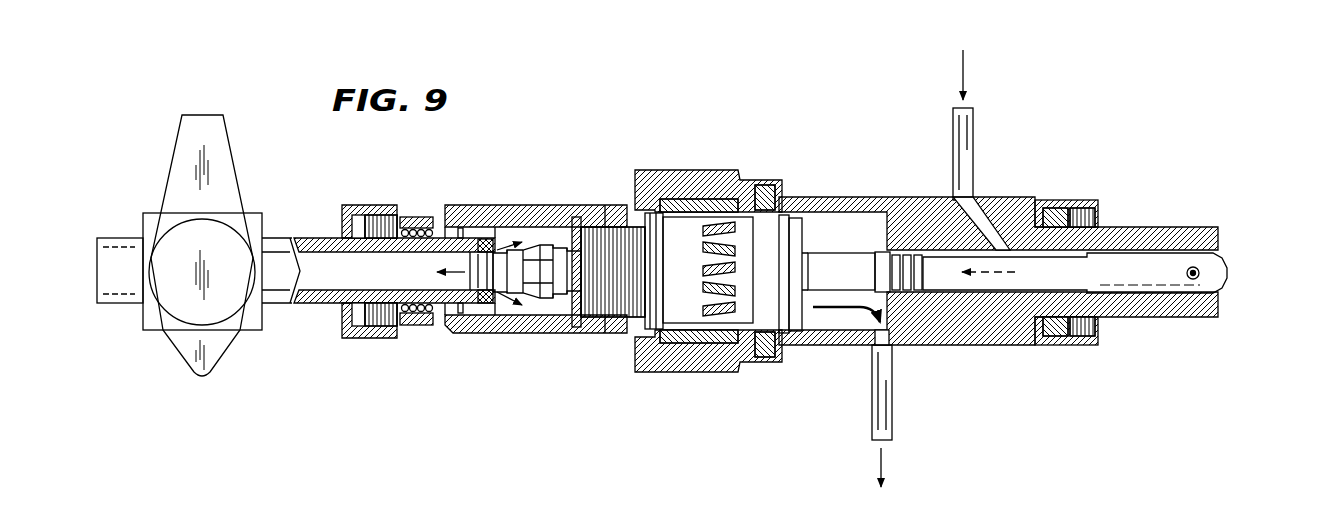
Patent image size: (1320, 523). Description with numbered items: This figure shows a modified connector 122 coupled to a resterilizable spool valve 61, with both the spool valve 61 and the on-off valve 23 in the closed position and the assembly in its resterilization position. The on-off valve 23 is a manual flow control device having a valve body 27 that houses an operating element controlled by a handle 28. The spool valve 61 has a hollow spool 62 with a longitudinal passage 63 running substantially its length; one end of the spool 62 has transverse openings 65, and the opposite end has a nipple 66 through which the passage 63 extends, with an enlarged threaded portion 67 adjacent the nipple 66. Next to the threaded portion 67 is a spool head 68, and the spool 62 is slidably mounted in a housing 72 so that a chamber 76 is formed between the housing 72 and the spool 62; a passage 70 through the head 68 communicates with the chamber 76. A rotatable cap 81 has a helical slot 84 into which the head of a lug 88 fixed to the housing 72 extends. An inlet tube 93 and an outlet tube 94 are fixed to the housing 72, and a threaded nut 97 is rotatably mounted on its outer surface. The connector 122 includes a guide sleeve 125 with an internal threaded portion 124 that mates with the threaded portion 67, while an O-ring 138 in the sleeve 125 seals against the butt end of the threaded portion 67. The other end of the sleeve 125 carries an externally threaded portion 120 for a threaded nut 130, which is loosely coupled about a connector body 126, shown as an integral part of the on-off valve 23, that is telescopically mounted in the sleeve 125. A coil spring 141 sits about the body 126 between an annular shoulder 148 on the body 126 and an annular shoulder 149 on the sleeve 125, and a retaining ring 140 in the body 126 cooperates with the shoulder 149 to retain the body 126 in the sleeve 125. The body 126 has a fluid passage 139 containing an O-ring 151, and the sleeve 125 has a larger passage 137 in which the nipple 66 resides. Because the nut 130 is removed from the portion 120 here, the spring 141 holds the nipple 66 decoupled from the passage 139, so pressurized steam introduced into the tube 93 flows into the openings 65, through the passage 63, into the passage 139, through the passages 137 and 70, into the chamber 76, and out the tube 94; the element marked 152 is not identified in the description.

The on-off valve 23 is at (175, 243).
The valve body 27 is at (253, 330).
The handle 28 is at (201, 127).
The resterilizable spool valve 61 is at (867, 163).
The hollow spool 62 is at (1017, 266).
The longitudinal passage 63 is at (727, 272).
The transverse openings 65 is at (1189, 283).
The nipple 66 is at (548, 236).
The threaded portion 67 is at (617, 234).
The spool head 68 is at (685, 230).
The passage 70 is at (722, 308).
The housing 72 is at (996, 330).
The chamber 76 is at (820, 222).
The rotatable cap 81 is at (653, 168).
The helical slot 84 is at (700, 338).
The lug 88 is at (763, 185).
The inlet tube 93 is at (966, 118).
The outlet tube 94 is at (885, 413).
The threaded nut 97 is at (1084, 200).
The externally threaded portion 120 is at (413, 217).
The modified connector 122 is at (513, 162).
The internal threaded portion 124 is at (617, 334).
The guide sleeve 125 is at (523, 333).
The connector body 126 is at (333, 306).
The threaded nut 130 is at (355, 238).
The passage 137 is at (545, 266).
The O-ring 138 is at (580, 330).
The fluid passage 139 is at (312, 282).
The retaining ring 140 is at (468, 320).
The coil spring 141 is at (413, 318).
The annular shoulder 148 is at (372, 207).
The annular shoulder 149 is at (440, 236).
The O-ring 151 is at (482, 247).
The spring seat 152 is at (430, 318).